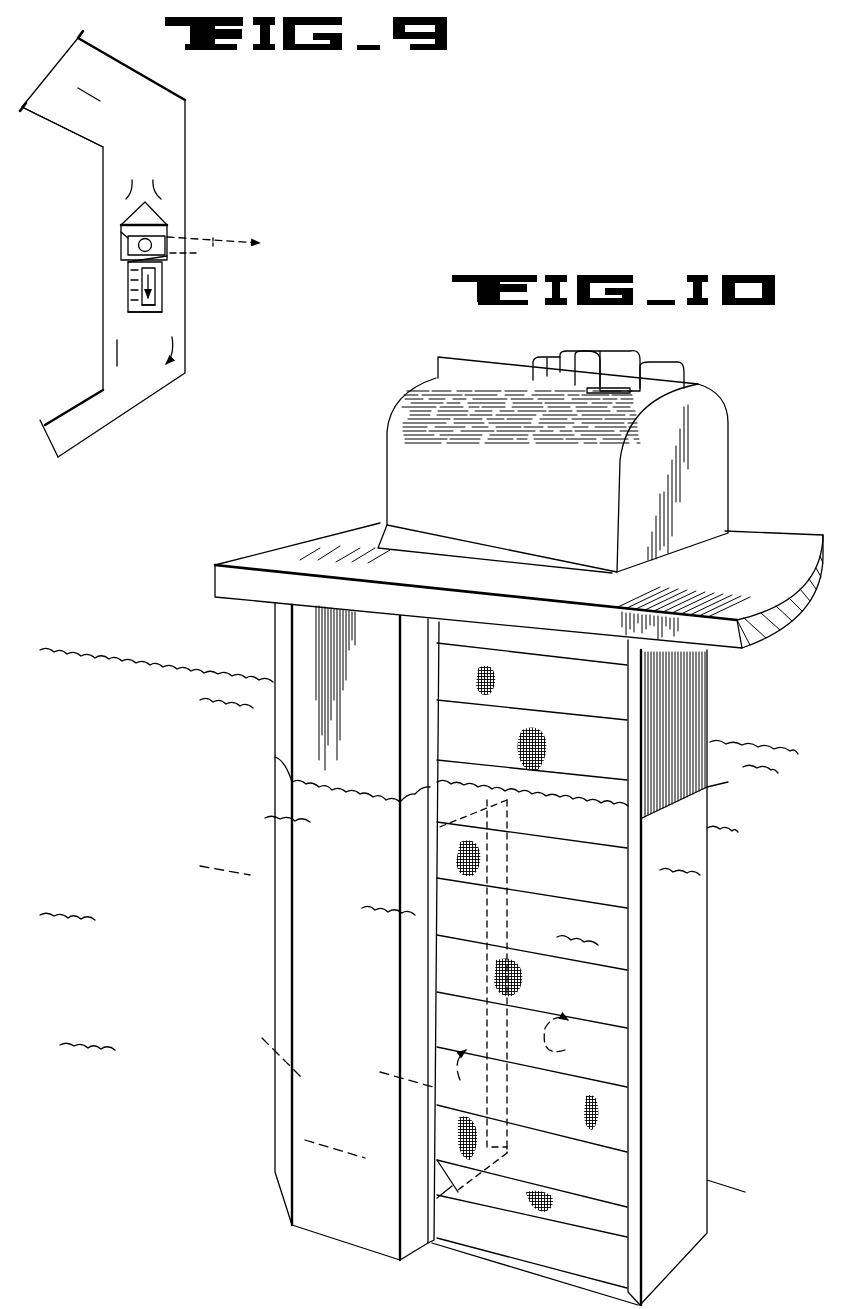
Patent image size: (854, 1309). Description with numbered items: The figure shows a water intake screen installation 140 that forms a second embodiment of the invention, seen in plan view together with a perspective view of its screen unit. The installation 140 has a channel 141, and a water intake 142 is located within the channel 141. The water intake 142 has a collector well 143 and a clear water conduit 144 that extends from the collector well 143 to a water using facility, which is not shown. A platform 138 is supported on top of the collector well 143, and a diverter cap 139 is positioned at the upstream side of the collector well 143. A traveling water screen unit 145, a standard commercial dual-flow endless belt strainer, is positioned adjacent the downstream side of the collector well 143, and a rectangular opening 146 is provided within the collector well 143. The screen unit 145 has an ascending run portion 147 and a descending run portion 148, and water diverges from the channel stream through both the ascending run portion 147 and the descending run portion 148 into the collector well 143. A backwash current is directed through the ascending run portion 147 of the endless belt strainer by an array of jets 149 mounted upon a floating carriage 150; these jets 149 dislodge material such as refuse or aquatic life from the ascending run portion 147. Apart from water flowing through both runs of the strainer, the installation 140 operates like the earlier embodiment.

In FIG. 9, the platform 138 is at (125, 232).
In FIG. 10, the platform 138 is at (294, 555).
In FIG. 9, the diverter cap 139 is at (138, 215).
In FIG. 10, the diverter cap 139 is at (278, 741).
In FIG. 9, the water intake screen installation 140 is at (198, 150).
In FIG. 9, the channel 141 is at (86, 131).
In FIG. 9, the water intake 142 is at (118, 249).
In FIG. 10, the water intake 142 is at (298, 1128).
In FIG. 9, the collector well 143 is at (167, 257).
In FIG. 10, the collector well 143 is at (302, 934).
In FIG. 9, the clear water conduit 144 is at (200, 236).
In FIG. 9, the traveling water screen unit 145 is at (171, 304).
In FIG. 10, the traveling water screen unit 145 is at (704, 382).
In FIG. 10, the rectangular opening 146 is at (443, 1197).
In FIG. 9, the ascending run portion 147 is at (134, 296).
In FIG. 10, the ascending run portion 147 is at (587, 1190).
In FIG. 9, the descending run portion 148 is at (157, 280).
In FIG. 9, the jets 149 is at (133, 280).
In FIG. 9, the floating carriage 150 is at (154, 306).